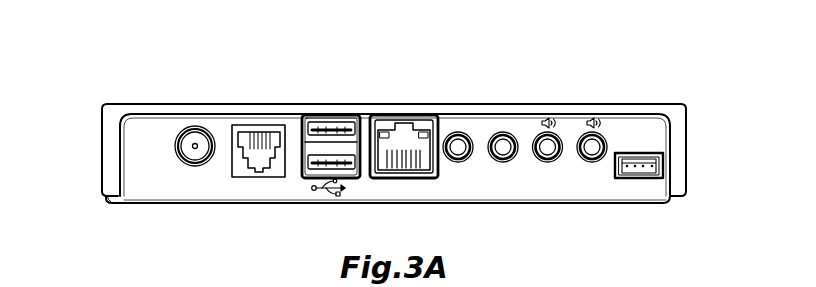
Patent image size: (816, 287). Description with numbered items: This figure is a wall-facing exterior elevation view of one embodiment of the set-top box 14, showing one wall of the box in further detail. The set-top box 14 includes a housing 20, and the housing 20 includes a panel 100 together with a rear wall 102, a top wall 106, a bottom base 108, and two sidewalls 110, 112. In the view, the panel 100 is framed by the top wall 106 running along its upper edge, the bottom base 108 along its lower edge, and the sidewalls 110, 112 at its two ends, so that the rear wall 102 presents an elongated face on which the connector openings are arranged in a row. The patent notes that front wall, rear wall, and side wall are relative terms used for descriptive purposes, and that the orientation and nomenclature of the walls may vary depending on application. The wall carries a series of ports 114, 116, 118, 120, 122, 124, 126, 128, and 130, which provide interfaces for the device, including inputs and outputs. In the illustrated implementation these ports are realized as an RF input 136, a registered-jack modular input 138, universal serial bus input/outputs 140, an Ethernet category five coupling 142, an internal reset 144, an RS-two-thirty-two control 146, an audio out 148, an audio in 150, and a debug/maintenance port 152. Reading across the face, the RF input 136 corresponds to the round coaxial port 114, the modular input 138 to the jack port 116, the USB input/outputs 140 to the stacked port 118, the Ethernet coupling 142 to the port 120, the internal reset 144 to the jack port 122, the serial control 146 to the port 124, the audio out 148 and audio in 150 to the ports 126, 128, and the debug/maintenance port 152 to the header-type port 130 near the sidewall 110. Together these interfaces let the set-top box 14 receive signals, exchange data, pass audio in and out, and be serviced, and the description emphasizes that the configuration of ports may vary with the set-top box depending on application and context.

The set-top box 14 is at (106, 92).
The housing 20 is at (120, 200).
The panel 100 is at (668, 103).
The rear wall 102 is at (155, 193).
The top wall 106 is at (165, 104).
The bottom base 108 is at (275, 203).
The sidewall 110 is at (686, 145).
The sidewall 112 is at (100, 147).
The port 114 is at (194, 128).
The port 116 is at (263, 128).
The port 118 is at (334, 124).
The port 120 is at (406, 124).
The port 122 is at (459, 132).
The port 124 is at (505, 132).
The port 126 is at (548, 132).
The port 128 is at (593, 132).
The port 130 is at (663, 168).
The RF input 136 is at (194, 165).
The RJ-45 input 138 is at (243, 179).
The universal serial bus (USB) input/outputs 140 is at (324, 173).
The Ethernet category 5 (Cat 5) coupling 142 is at (407, 174).
The internal reset 144 is at (460, 163).
The RS232 control 146 is at (505, 163).
The audio out 148 is at (547, 163).
The audio in 150 is at (593, 163).
The debug/maintenance port 152 is at (640, 179).